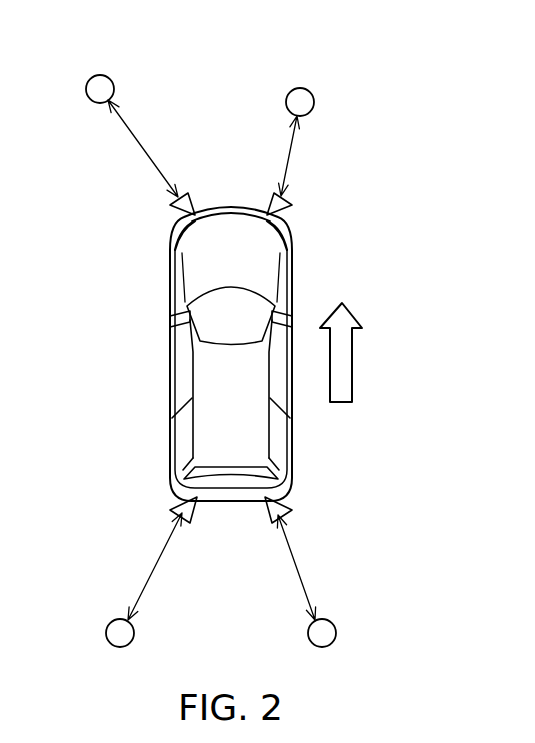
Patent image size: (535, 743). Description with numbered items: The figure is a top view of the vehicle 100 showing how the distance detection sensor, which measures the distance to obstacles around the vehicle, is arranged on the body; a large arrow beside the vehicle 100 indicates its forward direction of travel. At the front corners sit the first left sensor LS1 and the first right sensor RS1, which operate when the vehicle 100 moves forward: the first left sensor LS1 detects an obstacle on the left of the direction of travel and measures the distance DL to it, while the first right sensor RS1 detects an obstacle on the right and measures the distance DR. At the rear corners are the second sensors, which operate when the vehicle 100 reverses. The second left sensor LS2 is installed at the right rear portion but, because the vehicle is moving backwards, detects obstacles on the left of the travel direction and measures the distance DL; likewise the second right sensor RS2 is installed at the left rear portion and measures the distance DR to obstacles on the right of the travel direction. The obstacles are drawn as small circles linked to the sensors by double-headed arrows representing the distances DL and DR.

The vehicle 100 is at (178, 362).
The first left sensor LS1 is at (168, 208).
The first right sensor RS1 is at (292, 210).
The second right sensor RS2 is at (170, 520).
The second left sensor LS2 is at (292, 514).
The distance to left obstacle DL is at (143, 157).
The distance to right obstacle DR is at (291, 156).